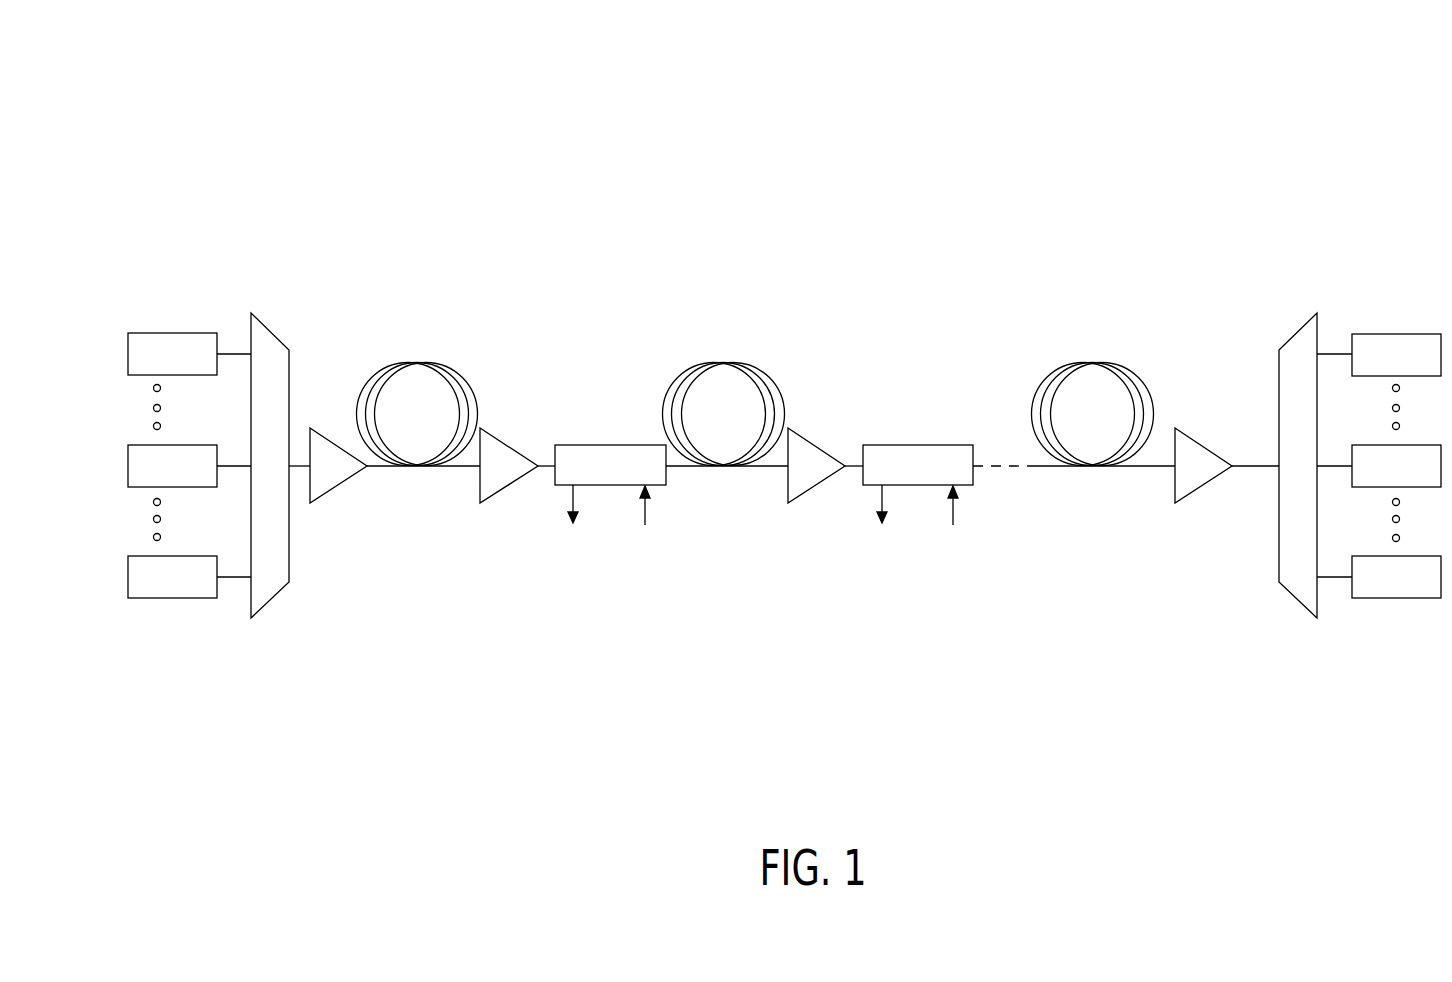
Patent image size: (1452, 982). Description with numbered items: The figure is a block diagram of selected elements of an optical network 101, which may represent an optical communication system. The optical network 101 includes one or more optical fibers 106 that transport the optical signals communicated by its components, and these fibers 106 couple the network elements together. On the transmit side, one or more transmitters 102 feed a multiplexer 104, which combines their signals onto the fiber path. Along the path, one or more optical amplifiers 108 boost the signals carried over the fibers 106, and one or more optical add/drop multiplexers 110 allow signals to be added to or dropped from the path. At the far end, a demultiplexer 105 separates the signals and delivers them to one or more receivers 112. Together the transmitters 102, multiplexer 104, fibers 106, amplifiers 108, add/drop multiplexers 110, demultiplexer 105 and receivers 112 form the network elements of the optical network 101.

The optical network 101 is at (221, 67).
The transmitter 102 is at (158, 333).
The multiplexer 104 is at (268, 329).
The demultiplexer 105 is at (1305, 325).
The optical fiber 106 is at (410, 362).
The optical amplifier 108 is at (333, 488).
The optical add/drop multiplexer 110 is at (594, 445).
The receiver 112 is at (1412, 334).